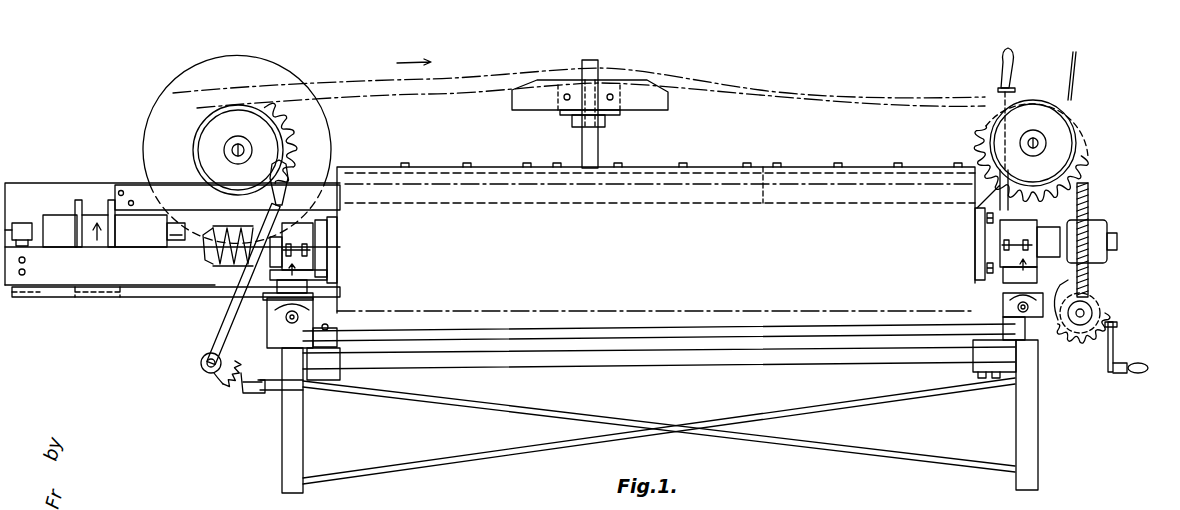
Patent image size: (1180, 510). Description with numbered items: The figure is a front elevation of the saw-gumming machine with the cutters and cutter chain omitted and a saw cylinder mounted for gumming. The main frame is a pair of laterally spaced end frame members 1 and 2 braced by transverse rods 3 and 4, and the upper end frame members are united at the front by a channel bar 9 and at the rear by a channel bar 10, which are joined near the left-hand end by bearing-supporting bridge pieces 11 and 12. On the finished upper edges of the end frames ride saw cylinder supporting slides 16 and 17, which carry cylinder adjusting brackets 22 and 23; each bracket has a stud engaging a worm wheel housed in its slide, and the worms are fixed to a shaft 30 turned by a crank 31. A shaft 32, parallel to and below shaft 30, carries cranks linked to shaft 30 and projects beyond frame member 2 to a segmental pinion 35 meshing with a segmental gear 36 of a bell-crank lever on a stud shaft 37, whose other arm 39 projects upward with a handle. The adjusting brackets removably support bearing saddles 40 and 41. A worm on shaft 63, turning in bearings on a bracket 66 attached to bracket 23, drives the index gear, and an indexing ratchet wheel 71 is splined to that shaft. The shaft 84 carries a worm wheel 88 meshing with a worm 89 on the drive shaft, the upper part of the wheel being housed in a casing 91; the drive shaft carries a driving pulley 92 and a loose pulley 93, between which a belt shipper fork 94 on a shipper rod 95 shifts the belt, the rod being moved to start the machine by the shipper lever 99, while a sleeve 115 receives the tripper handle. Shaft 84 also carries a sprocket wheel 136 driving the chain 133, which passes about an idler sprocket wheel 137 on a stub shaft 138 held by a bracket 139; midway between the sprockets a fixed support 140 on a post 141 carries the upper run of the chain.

The end frame member 1 is at (1033, 427).
The end frame member 2 is at (290, 446).
The transverse rod 3 is at (900, 392).
The transverse rod 4 is at (905, 456).
The front channel bar 9 is at (65, 290).
The rear channel bar 10 is at (62, 165).
The bridge piece 11 is at (20, 222).
The bridge piece 12 is at (168, 232).
The saw cylinder supporting slide 16 is at (1040, 345).
The saw cylinder supporting slide 17 is at (270, 330).
The cylinder adjusting bracket 22 is at (1000, 290).
The cylinder adjusting bracket 23 is at (315, 296).
The worm shaft 30 is at (705, 326).
The crank 31 is at (1115, 352).
The shaft 32 is at (548, 360).
The segmental pinion 35 is at (262, 394).
The segmental gear 36 is at (222, 388).
The stud shaft 37 is at (200, 366).
The bell-crank lever arm 39 is at (222, 325).
The bearing saddle 40 is at (1010, 258).
The bearing saddle 41 is at (312, 268).
The worm shaft 63 is at (1092, 308).
The bracket 66 is at (1090, 270).
The indexing ratchet wheel 71 is at (1110, 312).
The shaft 84 is at (252, 130).
The worm wheel 88 is at (210, 250).
The worm 89 is at (215, 291).
The casing 91 is at (335, 152).
The driving pulley 92 is at (60, 231).
The loose pulley 93 is at (95, 215).
The belt shipper fork 94 is at (108, 298).
The shipper rod 95 is at (145, 298).
The shipper lever 99 is at (1002, 58).
The sleeve 115 is at (1078, 58).
The chain 133 is at (797, 78).
The sprocket wheel 136 is at (300, 138).
The idler sprocket wheel 137 is at (1078, 150).
The stub shaft 138 is at (1050, 122).
The bracket 139 is at (982, 172).
The fixed support 140 is at (535, 102).
The post 141 is at (598, 137).